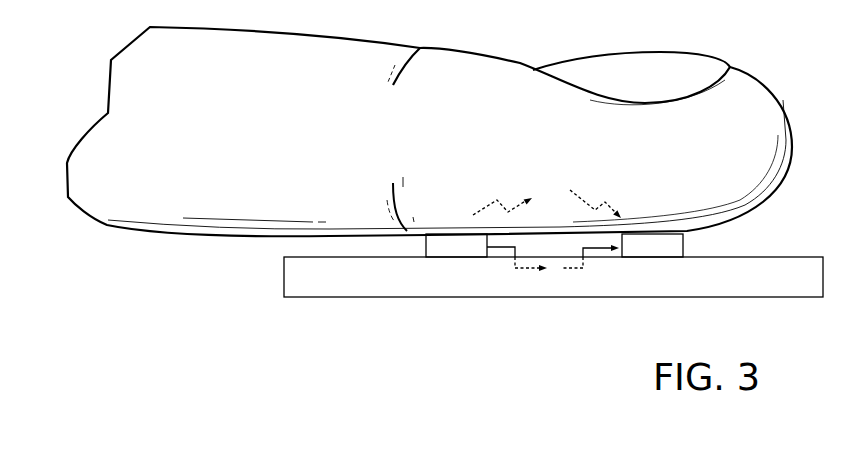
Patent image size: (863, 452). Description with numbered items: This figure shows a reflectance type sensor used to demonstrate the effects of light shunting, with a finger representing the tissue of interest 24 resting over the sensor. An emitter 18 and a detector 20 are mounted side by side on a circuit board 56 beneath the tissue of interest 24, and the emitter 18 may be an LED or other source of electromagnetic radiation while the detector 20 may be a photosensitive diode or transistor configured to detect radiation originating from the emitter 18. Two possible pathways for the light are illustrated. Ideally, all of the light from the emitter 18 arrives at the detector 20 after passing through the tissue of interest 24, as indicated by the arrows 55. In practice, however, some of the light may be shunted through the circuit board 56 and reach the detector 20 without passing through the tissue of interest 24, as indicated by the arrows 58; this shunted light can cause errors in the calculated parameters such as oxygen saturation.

The emitter 18 is at (426, 241).
The detector 20 is at (683, 248).
The tissue of interest 24 is at (748, 75).
The arrows 55 is at (473, 215).
The circuit board 56 is at (777, 257).
The arrows 58 is at (533, 270).